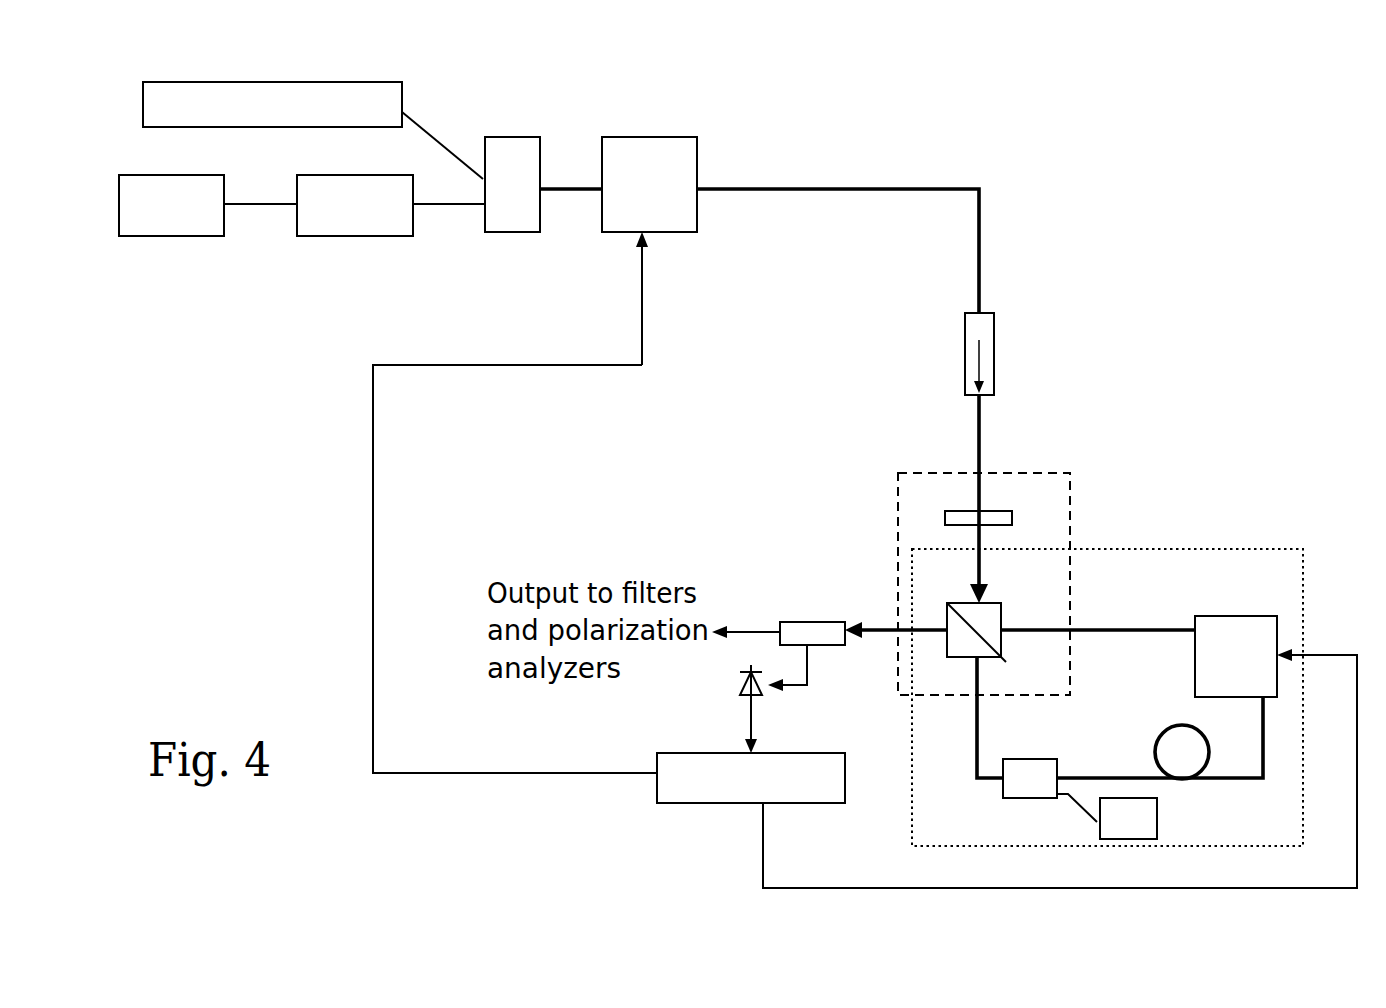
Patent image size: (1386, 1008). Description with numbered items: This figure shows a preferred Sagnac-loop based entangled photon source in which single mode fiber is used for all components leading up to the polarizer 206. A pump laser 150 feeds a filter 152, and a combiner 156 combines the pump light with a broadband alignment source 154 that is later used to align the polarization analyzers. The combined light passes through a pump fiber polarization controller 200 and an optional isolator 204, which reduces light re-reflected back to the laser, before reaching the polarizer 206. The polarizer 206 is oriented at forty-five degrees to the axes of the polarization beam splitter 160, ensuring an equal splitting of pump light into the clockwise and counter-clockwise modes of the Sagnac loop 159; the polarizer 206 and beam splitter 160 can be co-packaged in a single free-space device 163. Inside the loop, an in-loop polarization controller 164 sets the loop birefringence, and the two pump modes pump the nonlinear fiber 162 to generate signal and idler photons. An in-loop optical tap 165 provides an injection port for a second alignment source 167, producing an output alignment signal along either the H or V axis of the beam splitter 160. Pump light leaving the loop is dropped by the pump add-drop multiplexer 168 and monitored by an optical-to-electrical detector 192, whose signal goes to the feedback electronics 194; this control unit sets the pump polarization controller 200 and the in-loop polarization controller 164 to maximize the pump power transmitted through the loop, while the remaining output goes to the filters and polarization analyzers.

The pump laser 150 is at (171, 205).
The filter 152 is at (355, 205).
The alignment source 154 is at (272, 84).
The combiner 156 is at (511, 165).
The polarization controller 200 is at (691, 165).
The isolator 204 is at (1036, 346).
The polarizer 206 is at (1006, 517).
The single free-space device 163 is at (1003, 567).
The Sagnac loop 159 is at (1107, 697).
The polarization beam splitter 160 is at (1000, 623).
The in-loop polarization controller 164 is at (1236, 656).
The nonlinear fiber 162 is at (1165, 733).
The in-loop optical tap 165 is at (1029, 759).
The second alignment source 167 is at (1159, 818).
The pump add-drop multiplexer 168 is at (812, 613).
The optical-to-electrical detector 192 is at (722, 709).
The feedback electronics 194 is at (751, 778).